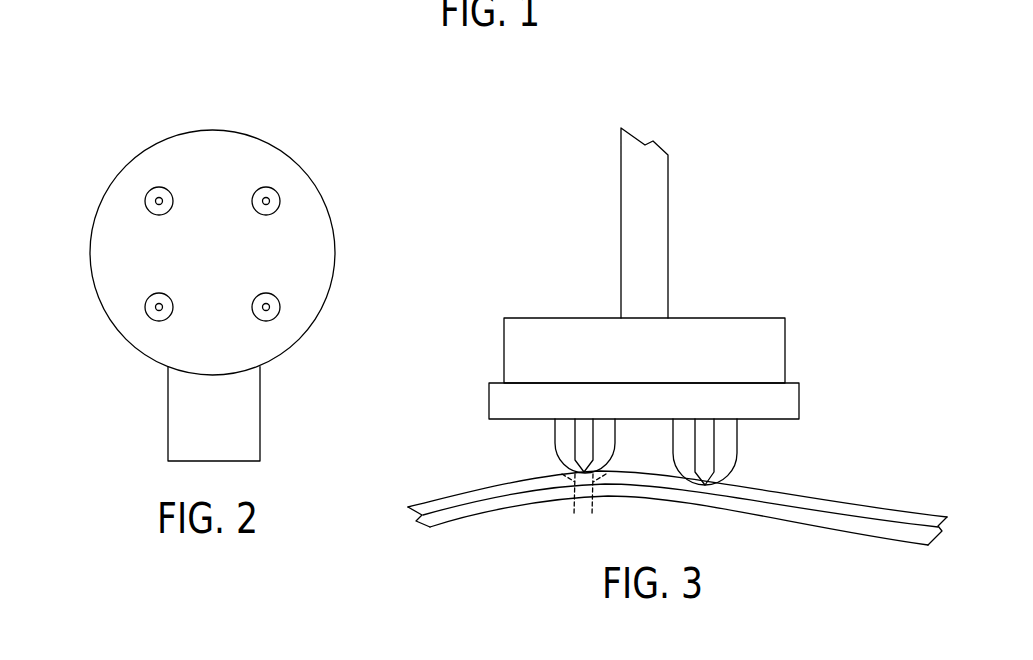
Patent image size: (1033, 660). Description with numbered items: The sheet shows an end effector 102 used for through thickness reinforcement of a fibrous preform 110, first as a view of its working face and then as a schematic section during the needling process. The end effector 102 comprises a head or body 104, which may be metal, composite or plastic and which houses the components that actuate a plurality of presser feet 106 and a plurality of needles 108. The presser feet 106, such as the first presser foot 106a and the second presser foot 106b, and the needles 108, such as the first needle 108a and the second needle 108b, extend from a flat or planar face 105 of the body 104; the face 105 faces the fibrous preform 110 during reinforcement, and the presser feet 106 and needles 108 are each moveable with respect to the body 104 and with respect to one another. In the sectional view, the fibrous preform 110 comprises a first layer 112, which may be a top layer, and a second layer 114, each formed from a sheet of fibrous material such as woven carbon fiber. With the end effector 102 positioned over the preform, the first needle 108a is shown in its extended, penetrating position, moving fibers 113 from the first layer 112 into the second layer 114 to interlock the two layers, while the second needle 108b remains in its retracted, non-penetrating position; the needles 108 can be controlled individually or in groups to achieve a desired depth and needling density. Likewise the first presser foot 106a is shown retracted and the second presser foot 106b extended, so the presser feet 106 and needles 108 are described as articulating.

In FIG. 2, the end effector 102 is at (213, 113).
In FIG. 3, the end effector 102 is at (517, 268).
In FIG. 2, the body 104 is at (165, 147).
In FIG. 2, the face 105 is at (300, 263).
In FIG. 3, the face 105 is at (636, 431).
In FIG. 2, the presser feet 106 is at (283, 163).
In FIG. 2, the first presser foot 106a is at (158, 200).
In FIG. 3, the first presser foot 106a is at (553, 436).
In FIG. 2, the second presser foot 106b is at (158, 307).
In FIG. 3, the second presser foot 106b is at (732, 468).
In FIG. 2, the needles 108 is at (302, 184).
In FIG. 2, the first needle 108a is at (158, 202).
In FIG. 3, the first needle 108a is at (572, 442).
In FIG. 2, the second needle 108b is at (158, 307).
In FIG. 3, the second needle 108b is at (715, 452).
In FIG. 3, the fibrous preform 110 is at (905, 505).
In FIG. 3, the first layer 112 is at (410, 505).
In FIG. 3, the fibers 113 is at (568, 488).
In FIG. 3, the second layer 114 is at (423, 520).